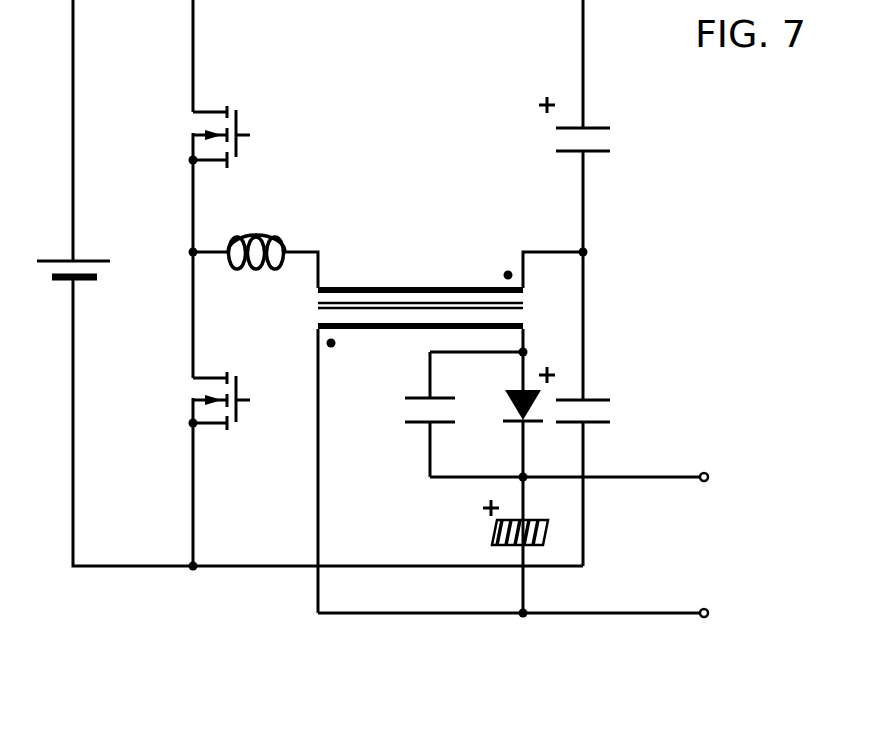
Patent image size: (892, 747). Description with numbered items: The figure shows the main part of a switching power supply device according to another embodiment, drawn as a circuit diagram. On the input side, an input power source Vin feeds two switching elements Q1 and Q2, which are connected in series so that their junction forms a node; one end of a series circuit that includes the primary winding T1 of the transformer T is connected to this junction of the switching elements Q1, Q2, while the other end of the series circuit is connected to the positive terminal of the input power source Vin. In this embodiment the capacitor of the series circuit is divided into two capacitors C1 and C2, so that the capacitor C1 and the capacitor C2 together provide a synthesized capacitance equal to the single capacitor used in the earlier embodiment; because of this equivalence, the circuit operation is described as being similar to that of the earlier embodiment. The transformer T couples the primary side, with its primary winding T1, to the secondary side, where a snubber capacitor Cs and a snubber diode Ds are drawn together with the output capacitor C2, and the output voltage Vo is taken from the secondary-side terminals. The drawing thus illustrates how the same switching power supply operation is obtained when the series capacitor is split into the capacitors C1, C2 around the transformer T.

The input voltage source Vin is at (64, 253).
The switching element Q1 is at (195, 401).
The switching element Q2 is at (195, 137).
The primary winding T1 is at (450, 432).
The transformer T is at (435, 312).
The snubber capacitor Cs is at (440, 414).
The snubber diode Ds is at (505, 491).
The capacitor C1 is at (583, 123).
The capacitor C2 is at (596, 394).
The output voltage terminal Vo is at (575, 462).